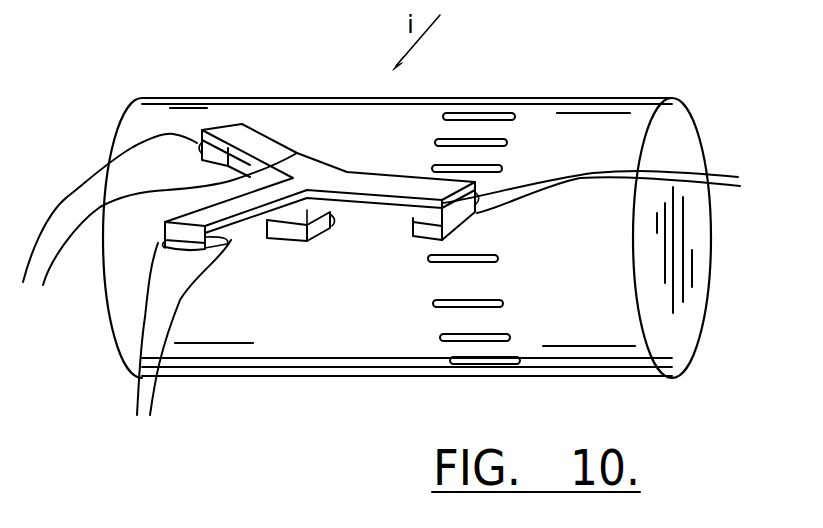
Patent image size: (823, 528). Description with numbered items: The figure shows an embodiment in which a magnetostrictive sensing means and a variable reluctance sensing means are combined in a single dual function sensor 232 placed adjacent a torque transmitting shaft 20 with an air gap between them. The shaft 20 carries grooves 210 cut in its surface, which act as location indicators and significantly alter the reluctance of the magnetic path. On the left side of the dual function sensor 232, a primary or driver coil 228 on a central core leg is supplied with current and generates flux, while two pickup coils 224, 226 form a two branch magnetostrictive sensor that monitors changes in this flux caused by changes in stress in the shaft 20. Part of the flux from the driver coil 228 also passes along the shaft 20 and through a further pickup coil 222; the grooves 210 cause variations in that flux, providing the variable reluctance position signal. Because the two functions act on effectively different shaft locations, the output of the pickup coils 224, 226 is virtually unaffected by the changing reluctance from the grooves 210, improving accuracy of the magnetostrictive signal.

The torque transmitting shaft 20 is at (407, 205).
The grooves 210 is at (415, 281).
The pickup coil 222 is at (619, 191).
The pickup coil 224 is at (178, 344).
The pickup coil 226 is at (152, 226).
The driver coil 228 is at (345, 138).
The dual function sensor 232 is at (318, 133).